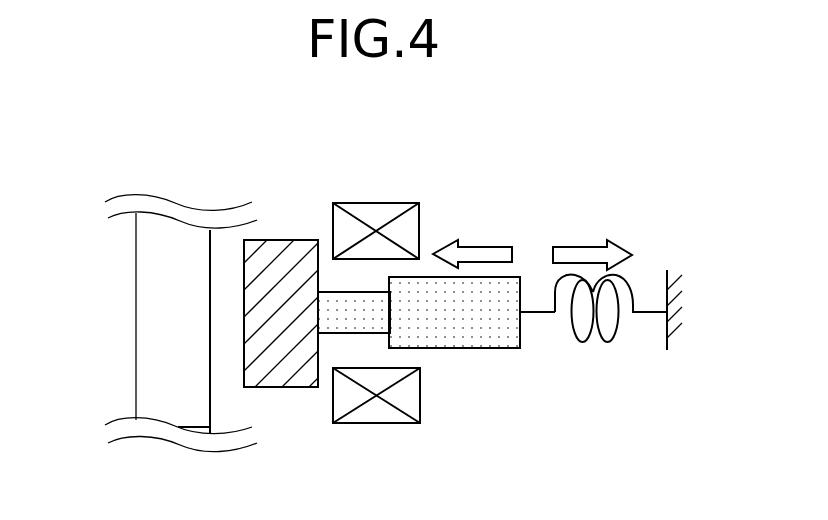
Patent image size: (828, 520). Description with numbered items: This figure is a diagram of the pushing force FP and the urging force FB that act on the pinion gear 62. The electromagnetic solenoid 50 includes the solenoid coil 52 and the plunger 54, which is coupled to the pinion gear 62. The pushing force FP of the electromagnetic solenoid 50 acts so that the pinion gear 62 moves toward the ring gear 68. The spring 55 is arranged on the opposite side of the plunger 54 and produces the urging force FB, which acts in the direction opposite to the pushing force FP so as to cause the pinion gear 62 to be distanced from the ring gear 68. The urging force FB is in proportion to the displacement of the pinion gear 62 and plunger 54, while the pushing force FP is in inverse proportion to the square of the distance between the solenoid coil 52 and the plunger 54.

The electromagnetic solenoid 50 is at (482, 165).
The solenoid coil 52 is at (398, 203).
The plunger 54 is at (485, 348).
The spring 55 is at (612, 340).
The pinion gear 62 is at (285, 387).
The ring gear 68 is at (137, 328).